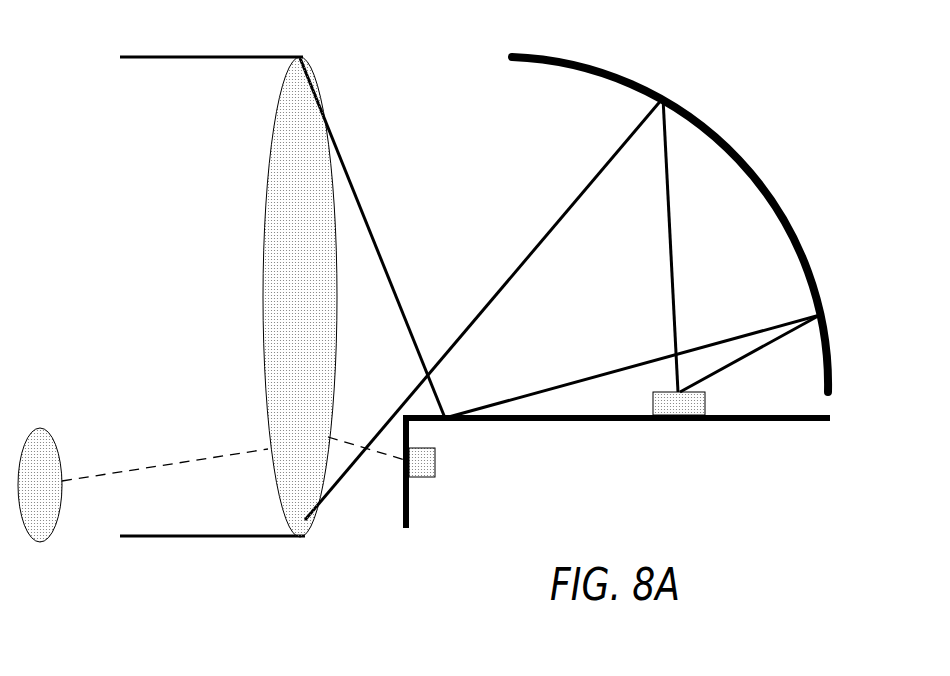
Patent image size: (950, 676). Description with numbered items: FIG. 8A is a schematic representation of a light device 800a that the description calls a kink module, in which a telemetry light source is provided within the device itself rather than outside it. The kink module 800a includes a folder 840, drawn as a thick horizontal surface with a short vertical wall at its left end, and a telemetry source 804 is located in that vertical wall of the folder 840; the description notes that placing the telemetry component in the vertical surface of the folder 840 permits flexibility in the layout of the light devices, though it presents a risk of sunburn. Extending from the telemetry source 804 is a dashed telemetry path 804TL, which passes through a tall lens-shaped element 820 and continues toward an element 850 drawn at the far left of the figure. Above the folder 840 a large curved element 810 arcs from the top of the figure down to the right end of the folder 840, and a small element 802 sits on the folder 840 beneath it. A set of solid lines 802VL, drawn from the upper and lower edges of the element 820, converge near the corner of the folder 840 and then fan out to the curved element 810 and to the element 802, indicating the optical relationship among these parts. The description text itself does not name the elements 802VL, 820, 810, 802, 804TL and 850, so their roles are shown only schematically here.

The kink module 800a is at (89, 32).
The field of view lines of image sensor 802 802VL is at (190, 62).
The lens 820 is at (322, 92).
The curved mirror 810 is at (685, 108).
The folder 840 is at (790, 423).
The image sensor 802 is at (678, 405).
The telemetry source 804 is at (420, 462).
The trace line of light source 804 804TL is at (160, 463).
The target / eye 850 is at (35, 542).